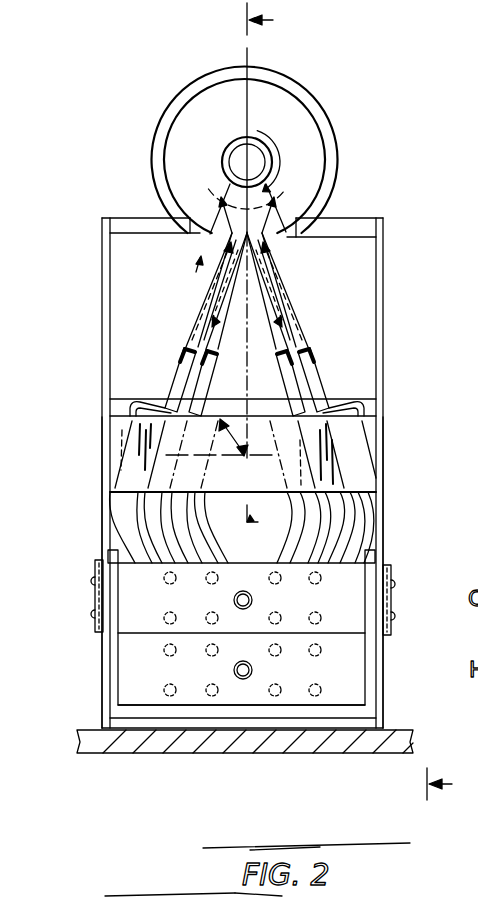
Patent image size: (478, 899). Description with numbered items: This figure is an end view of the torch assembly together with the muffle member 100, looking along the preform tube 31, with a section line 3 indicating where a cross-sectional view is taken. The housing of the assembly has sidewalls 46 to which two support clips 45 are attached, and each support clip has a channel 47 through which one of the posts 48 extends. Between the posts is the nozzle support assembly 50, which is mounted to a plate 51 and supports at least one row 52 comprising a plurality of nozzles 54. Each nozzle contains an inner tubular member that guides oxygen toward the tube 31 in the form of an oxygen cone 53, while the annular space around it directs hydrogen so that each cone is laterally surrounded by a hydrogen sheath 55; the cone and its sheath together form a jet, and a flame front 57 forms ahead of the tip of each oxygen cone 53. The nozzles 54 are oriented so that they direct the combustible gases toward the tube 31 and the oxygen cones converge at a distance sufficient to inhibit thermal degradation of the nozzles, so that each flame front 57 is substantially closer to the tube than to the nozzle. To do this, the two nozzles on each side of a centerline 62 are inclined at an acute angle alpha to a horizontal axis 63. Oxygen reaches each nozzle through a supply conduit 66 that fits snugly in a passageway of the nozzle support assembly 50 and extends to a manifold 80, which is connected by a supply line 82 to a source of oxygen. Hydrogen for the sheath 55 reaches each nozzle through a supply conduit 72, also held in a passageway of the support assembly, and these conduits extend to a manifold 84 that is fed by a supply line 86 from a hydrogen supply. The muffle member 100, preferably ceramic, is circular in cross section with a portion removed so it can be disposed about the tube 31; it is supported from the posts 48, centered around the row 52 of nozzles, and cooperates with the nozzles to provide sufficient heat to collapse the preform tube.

The section line 3- 3 is at (359, 402).
The preform tube 31 is at (233, 141).
The support clip 45 is at (385, 612).
The sidewall 46 is at (373, 667).
The channel 47 is at (387, 633).
The post 48 is at (385, 332).
The nozzle support assembly 50 is at (378, 448).
The plate 51 is at (378, 399).
The row 52 is at (170, 368).
The oxygen cone 53 is at (214, 278).
The nozzle 54 is at (150, 384).
The hydrogen sheath 55 is at (205, 249).
The flame front 57 is at (282, 200).
The centerline 62 is at (250, 218).
The horizontal axis 63 is at (261, 461).
The supply conduit 66 is at (355, 512).
The supply conduit 72 is at (372, 517).
The manifold 80 is at (374, 572).
The supply line 82 is at (253, 600).
The manifold 84 is at (374, 690).
The supply line 86 is at (245, 680).
The muffle member 100 is at (322, 110).